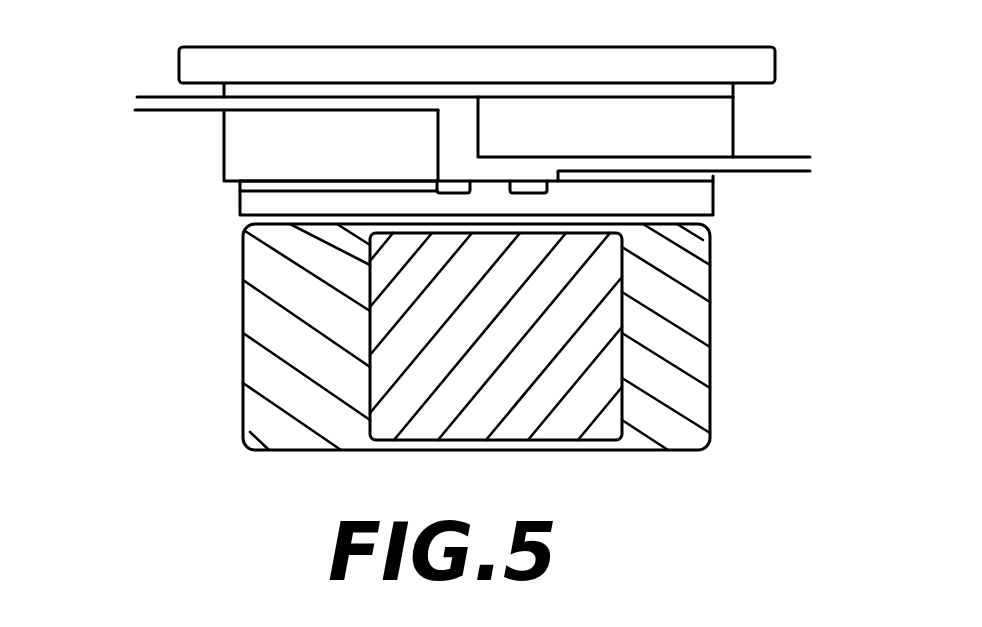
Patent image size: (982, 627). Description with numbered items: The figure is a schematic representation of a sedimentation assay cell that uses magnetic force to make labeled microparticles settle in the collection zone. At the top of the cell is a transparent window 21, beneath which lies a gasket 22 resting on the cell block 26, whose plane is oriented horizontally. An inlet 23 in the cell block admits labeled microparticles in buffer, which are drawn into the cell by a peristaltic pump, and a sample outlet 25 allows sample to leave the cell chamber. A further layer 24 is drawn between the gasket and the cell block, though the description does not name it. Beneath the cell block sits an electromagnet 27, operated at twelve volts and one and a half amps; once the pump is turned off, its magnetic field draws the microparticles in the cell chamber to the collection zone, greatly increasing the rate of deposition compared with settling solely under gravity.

The transparent window 21 is at (775, 70).
The gasket 22 is at (733, 127).
The inlet 23 is at (137, 103).
The electrode layer 24 is at (238, 193).
The sample outlet 25 is at (810, 163).
The cell block 26 is at (712, 202).
The electromagnet 27 is at (710, 408).